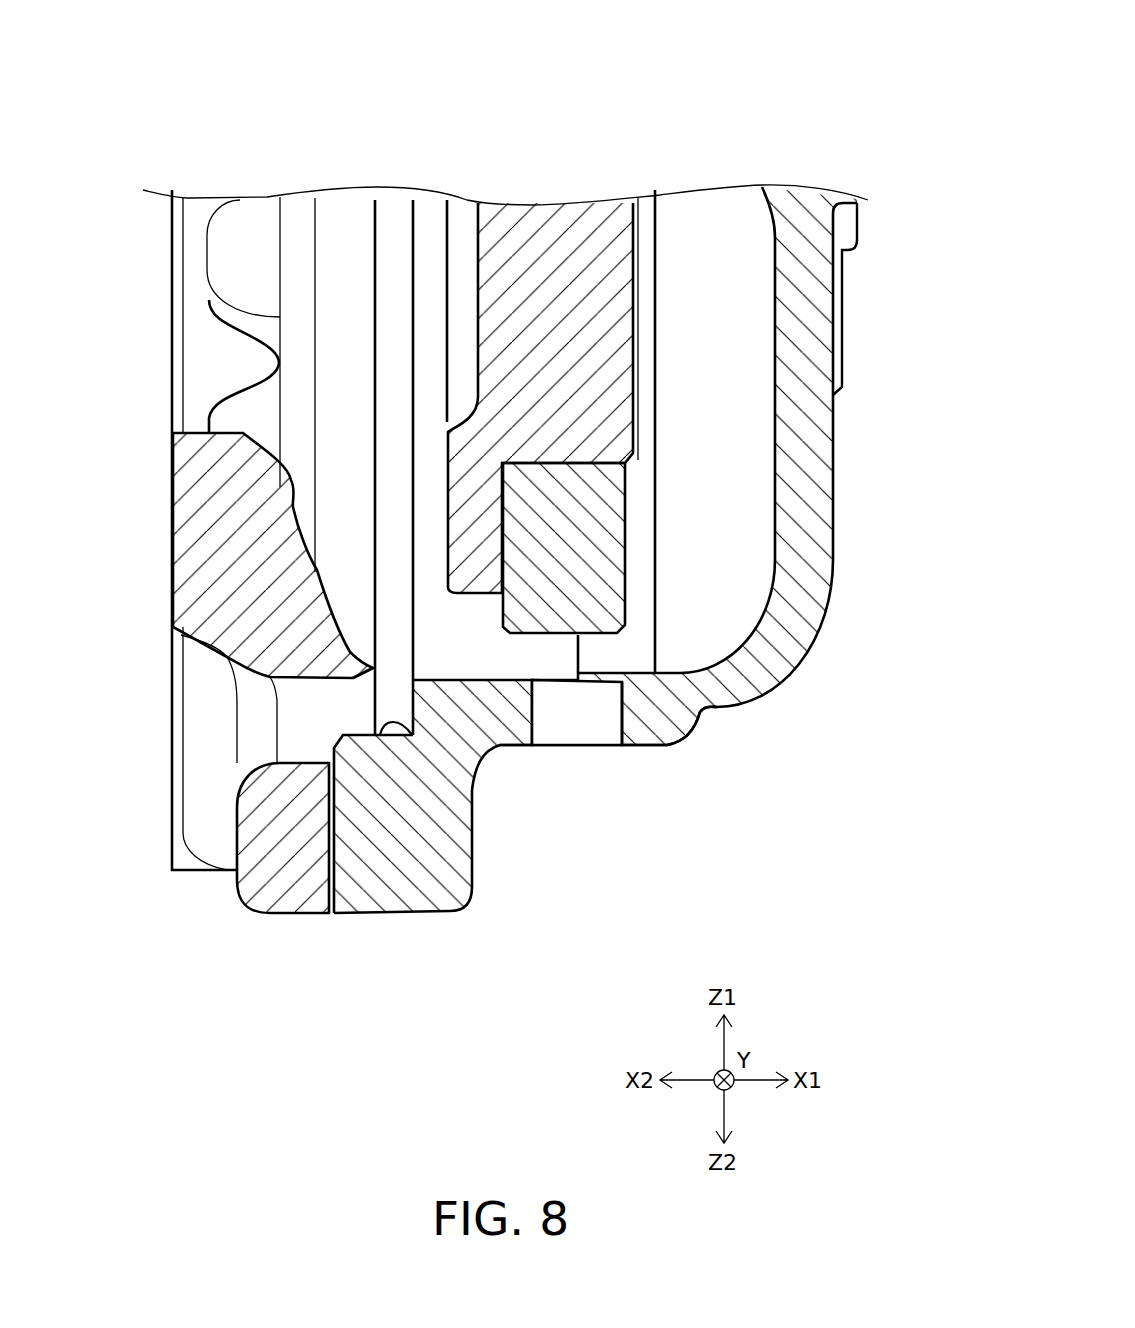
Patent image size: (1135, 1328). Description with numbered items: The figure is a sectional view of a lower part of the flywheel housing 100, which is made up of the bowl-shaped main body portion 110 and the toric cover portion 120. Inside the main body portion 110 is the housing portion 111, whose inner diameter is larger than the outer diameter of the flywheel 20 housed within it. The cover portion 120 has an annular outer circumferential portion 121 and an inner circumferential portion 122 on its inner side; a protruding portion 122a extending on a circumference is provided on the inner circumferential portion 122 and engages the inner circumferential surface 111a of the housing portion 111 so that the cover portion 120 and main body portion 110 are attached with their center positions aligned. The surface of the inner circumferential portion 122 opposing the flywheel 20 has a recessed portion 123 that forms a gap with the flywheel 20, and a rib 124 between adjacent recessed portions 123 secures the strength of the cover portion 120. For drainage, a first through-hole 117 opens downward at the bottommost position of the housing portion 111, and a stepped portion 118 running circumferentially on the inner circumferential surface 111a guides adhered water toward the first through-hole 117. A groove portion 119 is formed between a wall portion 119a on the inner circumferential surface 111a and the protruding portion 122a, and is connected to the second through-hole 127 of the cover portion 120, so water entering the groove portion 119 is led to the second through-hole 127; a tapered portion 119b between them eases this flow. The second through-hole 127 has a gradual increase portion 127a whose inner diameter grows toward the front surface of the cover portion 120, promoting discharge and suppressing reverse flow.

The flywheel housing 100 is at (742, 107).
The flywheel 20 is at (543, 217).
The main body portion 110 is at (833, 450).
The housing portion 111 is at (740, 335).
The inner circumferential surface 111a is at (397, 217).
The first through-hole 117 is at (573, 732).
The stepped portion 118 is at (623, 675).
The groove portion 119 is at (473, 795).
The wall portion 119a is at (403, 680).
The tapered portion 119b is at (363, 720).
The cover portion 120 is at (298, 913).
The outer circumferential portion 121 is at (255, 880).
The inner circumferential portion 122 is at (198, 528).
The protruding portion 122a is at (390, 680).
The recessed portion 123 is at (237, 243).
The rib 124 is at (250, 360).
The second through-hole 127 is at (340, 698).
The gradual increase portion 127a is at (253, 777).